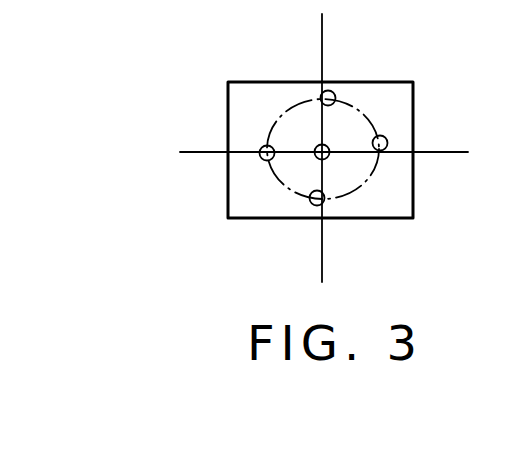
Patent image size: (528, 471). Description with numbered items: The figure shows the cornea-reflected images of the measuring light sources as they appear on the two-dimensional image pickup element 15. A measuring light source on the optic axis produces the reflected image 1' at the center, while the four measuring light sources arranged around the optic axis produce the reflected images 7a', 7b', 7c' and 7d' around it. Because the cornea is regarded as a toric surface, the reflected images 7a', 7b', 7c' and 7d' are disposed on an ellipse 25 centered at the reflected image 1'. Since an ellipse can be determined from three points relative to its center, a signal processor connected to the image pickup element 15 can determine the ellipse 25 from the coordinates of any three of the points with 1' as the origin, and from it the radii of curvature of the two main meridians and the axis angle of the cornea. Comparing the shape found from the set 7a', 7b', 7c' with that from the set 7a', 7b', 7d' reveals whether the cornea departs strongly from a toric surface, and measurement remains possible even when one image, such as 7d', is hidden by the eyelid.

The two-dimensional image pickup element 15 is at (243, 107).
The ellipse 25 is at (297, 106).
The reflected image of on-axis light source 1' is at (344, 215).
The reflected image of light source 7a 7a' is at (215, 173).
The reflected image of light source 7b 7b' is at (291, 238).
The reflected image of light source 7c 7c' is at (428, 121).
The reflected image of light source 7d 7d' is at (358, 68).